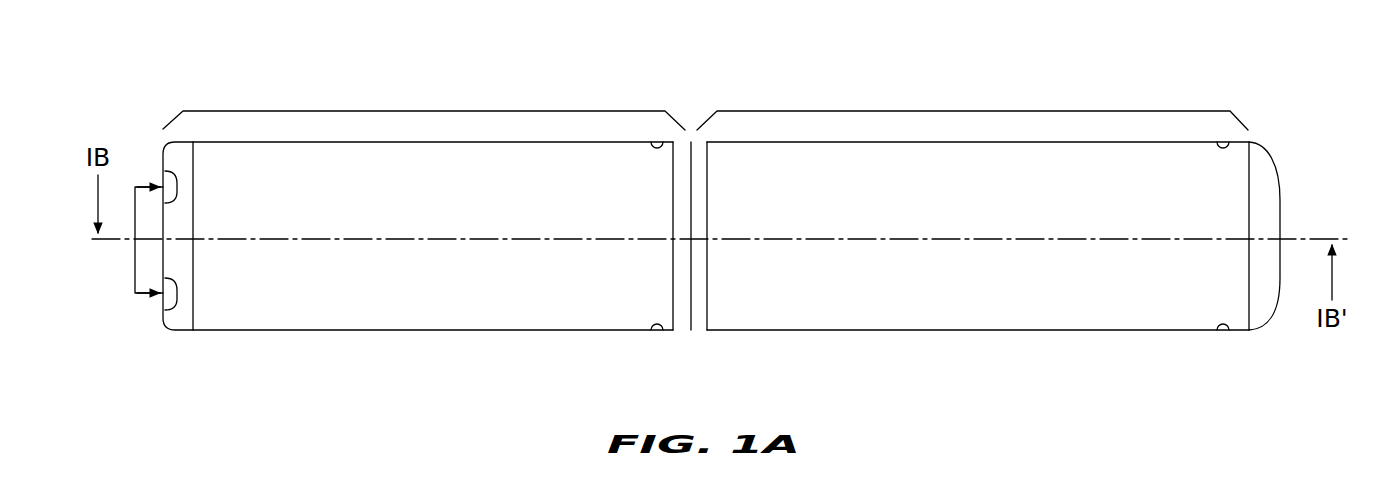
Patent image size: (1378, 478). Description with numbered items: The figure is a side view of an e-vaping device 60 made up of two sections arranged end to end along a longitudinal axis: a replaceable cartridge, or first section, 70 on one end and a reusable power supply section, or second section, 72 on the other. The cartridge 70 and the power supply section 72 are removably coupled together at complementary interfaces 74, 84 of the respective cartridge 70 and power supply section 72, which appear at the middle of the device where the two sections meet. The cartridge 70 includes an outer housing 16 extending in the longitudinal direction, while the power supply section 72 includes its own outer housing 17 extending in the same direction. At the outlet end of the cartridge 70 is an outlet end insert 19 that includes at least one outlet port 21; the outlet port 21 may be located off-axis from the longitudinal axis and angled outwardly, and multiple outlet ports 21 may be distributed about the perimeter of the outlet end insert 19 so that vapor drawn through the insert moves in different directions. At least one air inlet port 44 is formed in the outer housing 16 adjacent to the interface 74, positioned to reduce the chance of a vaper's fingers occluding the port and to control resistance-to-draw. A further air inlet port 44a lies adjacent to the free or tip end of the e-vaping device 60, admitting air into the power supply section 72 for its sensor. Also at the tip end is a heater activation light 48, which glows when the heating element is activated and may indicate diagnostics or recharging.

The e-vaping device 60 is at (530, 58).
The outer housing 16 is at (371, 305).
The outer housing 17 is at (887, 297).
The outlet end insert 19 is at (183, 320).
The outlet port 21 is at (135, 250).
The air inlet port 44 is at (658, 148).
The air inlet port 44a is at (1223, 148).
The heater activation light 48 is at (1272, 205).
The cartridge 70 is at (463, 110).
The power supply section 72 is at (1013, 110).
The interface 74 is at (682, 320).
The interface 84 is at (698, 320).